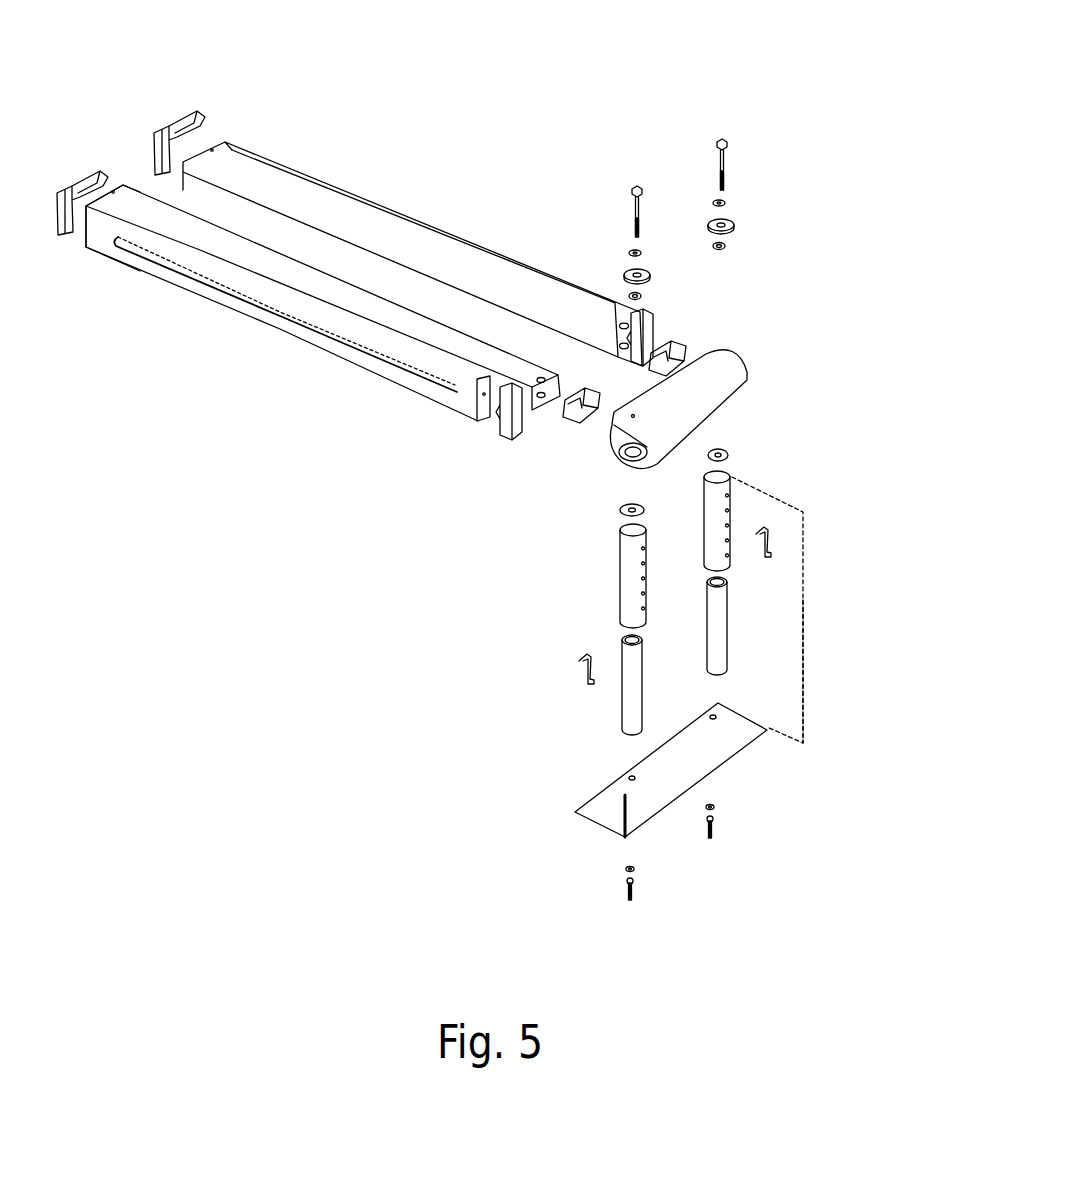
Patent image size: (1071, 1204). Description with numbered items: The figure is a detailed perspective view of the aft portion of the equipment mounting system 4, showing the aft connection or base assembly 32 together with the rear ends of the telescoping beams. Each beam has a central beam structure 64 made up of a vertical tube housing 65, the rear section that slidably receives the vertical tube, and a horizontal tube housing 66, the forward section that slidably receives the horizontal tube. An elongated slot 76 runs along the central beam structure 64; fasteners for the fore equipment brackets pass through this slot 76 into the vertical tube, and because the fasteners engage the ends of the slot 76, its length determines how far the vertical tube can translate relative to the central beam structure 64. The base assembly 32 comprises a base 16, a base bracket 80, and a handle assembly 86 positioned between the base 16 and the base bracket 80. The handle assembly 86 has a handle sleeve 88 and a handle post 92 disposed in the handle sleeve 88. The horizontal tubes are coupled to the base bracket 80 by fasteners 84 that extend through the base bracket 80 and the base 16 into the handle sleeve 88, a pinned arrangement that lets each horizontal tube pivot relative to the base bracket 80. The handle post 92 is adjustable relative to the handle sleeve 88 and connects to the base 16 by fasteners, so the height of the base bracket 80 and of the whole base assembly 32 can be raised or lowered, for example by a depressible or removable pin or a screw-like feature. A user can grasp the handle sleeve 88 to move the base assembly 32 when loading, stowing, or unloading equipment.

The mounting system 4 is at (217, 91).
The base 16 is at (605, 815).
The base assembly 32 is at (876, 657).
The central beam structure 64 is at (222, 262).
The vertical tube housing 65 is at (102, 228).
The horizontal tube housing 66 is at (513, 283).
The elongated slot 76 is at (297, 327).
The base bracket 80 is at (632, 424).
The fasteners 84 is at (722, 163).
The handle assembly 86 is at (826, 633).
The handle sleeve 88 is at (715, 530).
The handle post 92 is at (713, 628).